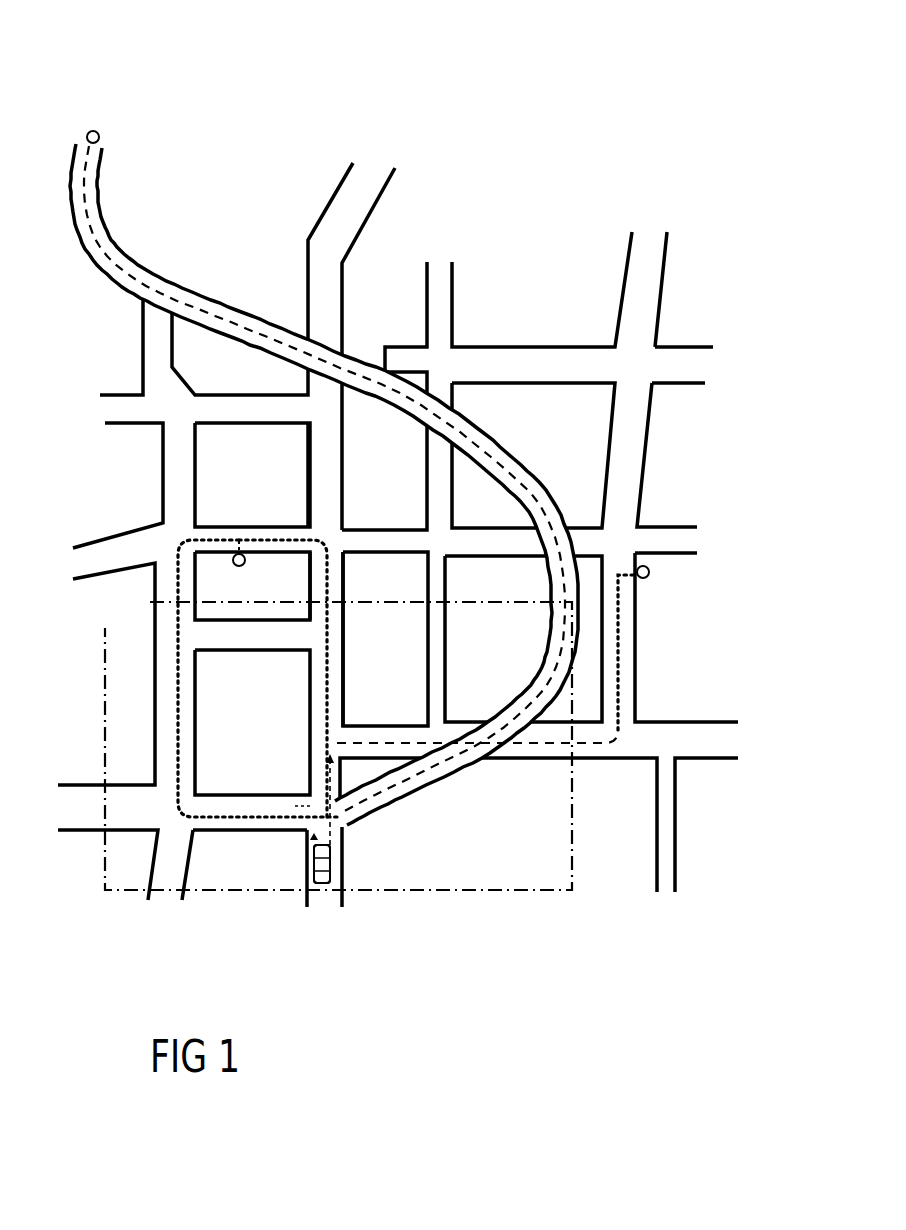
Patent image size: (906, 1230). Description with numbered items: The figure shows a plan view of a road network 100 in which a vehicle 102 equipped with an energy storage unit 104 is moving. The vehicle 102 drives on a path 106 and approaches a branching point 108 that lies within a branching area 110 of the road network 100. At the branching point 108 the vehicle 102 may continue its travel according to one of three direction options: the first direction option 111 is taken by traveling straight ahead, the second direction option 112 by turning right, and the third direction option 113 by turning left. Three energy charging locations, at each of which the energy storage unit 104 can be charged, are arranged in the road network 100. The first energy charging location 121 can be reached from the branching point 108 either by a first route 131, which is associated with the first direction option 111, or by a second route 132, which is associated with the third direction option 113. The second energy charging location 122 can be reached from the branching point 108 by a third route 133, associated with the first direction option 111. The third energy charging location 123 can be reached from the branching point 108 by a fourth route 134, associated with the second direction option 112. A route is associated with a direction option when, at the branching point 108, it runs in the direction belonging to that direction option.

The road network 100 is at (495, 97).
The vehicle 102 is at (323, 884).
The energy storage unit 104 is at (347, 860).
The path 106 is at (333, 893).
The branching point 108 is at (317, 838).
The branching area 110 is at (577, 857).
The first direction option 111 is at (332, 768).
The second direction option 112 is at (367, 797).
The third direction option 113 is at (290, 806).
The first energy charging location 121 is at (233, 563).
The second energy charging location 122 is at (650, 574).
The third energy charging location 123 is at (93, 131).
The first route 131 is at (328, 627).
The second route 132 is at (177, 723).
The third route 133 is at (620, 692).
The fourth route 134 is at (143, 283).